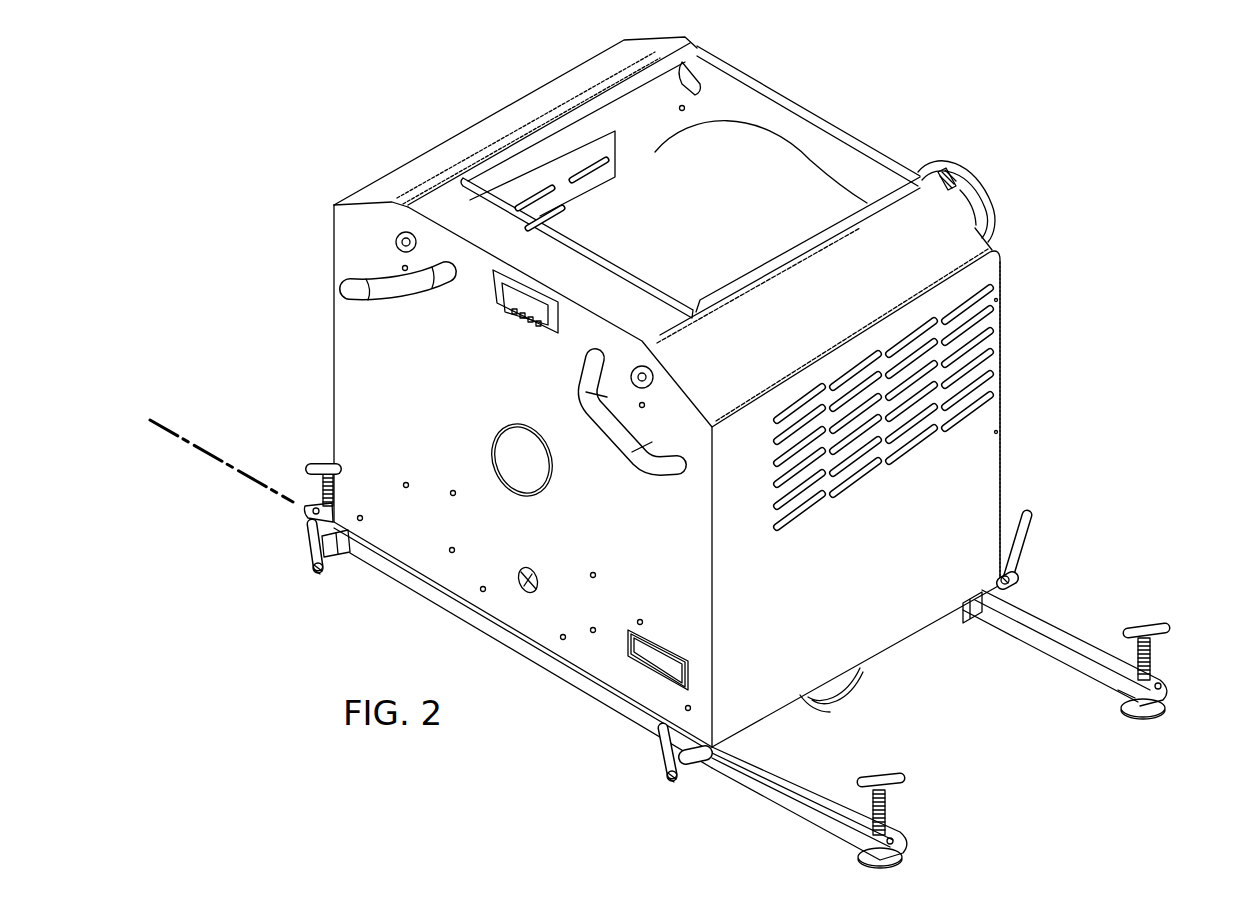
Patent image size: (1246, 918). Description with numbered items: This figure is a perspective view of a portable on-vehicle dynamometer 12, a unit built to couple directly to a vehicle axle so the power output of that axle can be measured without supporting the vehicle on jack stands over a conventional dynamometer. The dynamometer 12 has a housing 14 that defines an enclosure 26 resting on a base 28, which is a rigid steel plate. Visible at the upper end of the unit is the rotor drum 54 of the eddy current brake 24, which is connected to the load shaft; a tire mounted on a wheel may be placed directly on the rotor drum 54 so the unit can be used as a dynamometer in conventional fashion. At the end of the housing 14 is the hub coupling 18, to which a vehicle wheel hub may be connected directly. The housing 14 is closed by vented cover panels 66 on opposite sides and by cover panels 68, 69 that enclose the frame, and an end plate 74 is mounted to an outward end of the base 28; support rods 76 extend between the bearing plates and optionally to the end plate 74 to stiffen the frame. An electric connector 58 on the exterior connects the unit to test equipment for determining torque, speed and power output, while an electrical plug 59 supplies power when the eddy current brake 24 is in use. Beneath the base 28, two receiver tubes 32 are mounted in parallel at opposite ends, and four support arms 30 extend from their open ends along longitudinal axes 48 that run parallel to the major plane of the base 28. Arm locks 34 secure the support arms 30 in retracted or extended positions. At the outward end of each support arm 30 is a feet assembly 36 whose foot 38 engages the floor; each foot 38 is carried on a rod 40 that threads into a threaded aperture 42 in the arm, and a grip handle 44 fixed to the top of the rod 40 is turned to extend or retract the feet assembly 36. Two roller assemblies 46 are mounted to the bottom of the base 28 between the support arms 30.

The portable on-vehicle dynamometer 12 is at (982, 112).
The housing 14 is at (995, 455).
The hub coupling 18 is at (990, 205).
The eddy current brake 24 is at (820, 180).
The enclosure 26 is at (994, 493).
The base 28 is at (432, 614).
The support arms 30 is at (303, 508).
The receiver tubes 32 is at (590, 695).
The arm locks 34 is at (305, 548).
The feet assembly 36 is at (920, 845).
The feet 38 is at (860, 862).
The rod 40 is at (320, 492).
The threaded apertures 42 is at (1118, 690).
The grip handles 44 is at (322, 462).
The roller assemblies 46 is at (837, 700).
The longitudinal axes 48 is at (226, 464).
The rotor drum 54 is at (765, 145).
The electric connector 58 is at (506, 312).
The electrical plug 59 is at (543, 580).
The vented cover panels 66 is at (612, 152).
The cover panel 68 is at (985, 240).
The cover panel 69 is at (612, 276).
The end plate 74 is at (333, 372).
The support rods 76 is at (695, 82).